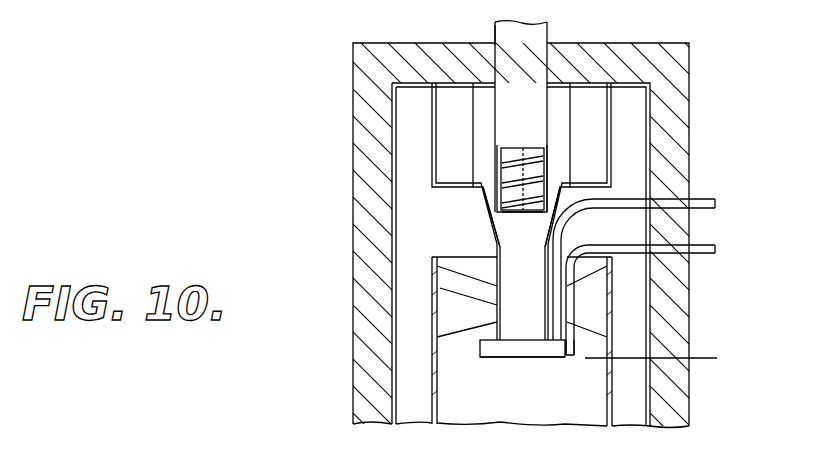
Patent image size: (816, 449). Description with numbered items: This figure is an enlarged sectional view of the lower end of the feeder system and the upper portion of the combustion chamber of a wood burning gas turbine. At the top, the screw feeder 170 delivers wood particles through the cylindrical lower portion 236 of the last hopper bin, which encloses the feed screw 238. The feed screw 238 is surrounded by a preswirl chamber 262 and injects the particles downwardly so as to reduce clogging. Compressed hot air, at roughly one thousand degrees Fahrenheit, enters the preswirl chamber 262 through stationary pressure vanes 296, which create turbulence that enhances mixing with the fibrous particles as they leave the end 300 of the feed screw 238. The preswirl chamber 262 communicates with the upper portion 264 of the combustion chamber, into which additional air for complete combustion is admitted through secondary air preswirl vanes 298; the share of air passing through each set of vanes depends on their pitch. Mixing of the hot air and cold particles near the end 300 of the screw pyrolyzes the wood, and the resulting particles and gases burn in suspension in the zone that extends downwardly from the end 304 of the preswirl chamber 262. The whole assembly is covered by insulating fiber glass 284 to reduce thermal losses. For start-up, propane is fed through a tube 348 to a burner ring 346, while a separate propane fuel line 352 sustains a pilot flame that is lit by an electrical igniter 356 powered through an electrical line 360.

The screw feeder 170 is at (494, 41).
The cylindrical lower portion 236 is at (540, 34).
The feed screw 238 is at (540, 152).
The preswirl chamber 262 is at (484, 206).
The upper portion of the combustion chamber 264 is at (432, 260).
The fiber glass 284 is at (362, 358).
The stationary pressure vanes 296 is at (438, 118).
The secondary air preswirl vanes 298 is at (455, 322).
The end of the feed screw 300 is at (510, 215).
The end of the preswirl chamber 304 is at (530, 358).
The burner ring 346 is at (503, 363).
The tube 348 is at (700, 199).
The propane fuel line 352 is at (703, 245).
The electrical igniter 356 is at (580, 358).
The electrical line 360 is at (708, 341).